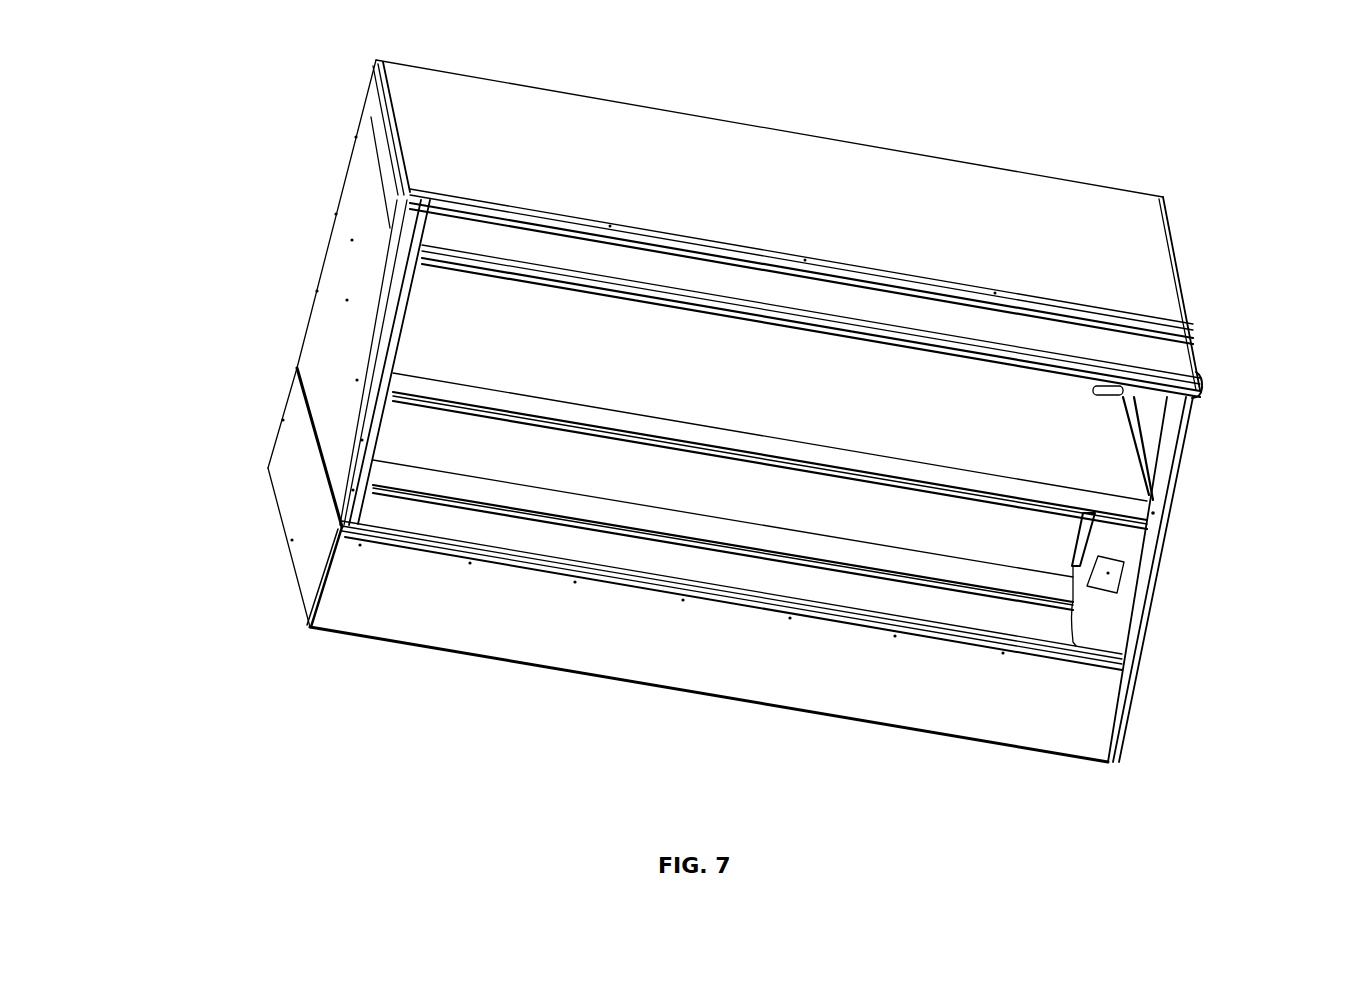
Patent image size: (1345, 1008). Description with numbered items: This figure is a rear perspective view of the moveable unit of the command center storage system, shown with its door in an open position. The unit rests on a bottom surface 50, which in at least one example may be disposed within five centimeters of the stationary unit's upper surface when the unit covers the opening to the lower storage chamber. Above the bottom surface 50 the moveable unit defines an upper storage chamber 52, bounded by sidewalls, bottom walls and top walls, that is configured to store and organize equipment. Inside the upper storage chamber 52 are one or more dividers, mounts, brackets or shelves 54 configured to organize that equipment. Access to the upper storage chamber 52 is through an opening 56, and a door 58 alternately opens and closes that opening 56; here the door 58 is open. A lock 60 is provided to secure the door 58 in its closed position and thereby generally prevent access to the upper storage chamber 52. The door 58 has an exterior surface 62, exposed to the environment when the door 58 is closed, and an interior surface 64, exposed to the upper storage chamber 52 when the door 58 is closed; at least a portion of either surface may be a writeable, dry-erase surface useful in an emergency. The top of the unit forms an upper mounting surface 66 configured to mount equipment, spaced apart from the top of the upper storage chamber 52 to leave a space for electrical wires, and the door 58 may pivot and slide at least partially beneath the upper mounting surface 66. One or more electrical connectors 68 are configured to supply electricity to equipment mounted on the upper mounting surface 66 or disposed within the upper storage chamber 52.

The bottom surface 50 is at (287, 548).
The upper storage chamber 52 is at (792, 510).
The dividers, mounts, brackets, shelves 54 is at (1113, 520).
The opening 56 is at (1180, 442).
The door 58 is at (1202, 388).
The lock 60 is at (1130, 657).
The exterior surface 62 is at (1147, 352).
The interior surface 64 is at (467, 280).
The upper mounting surface 66 is at (628, 156).
The electrical connector 68 is at (1127, 574).